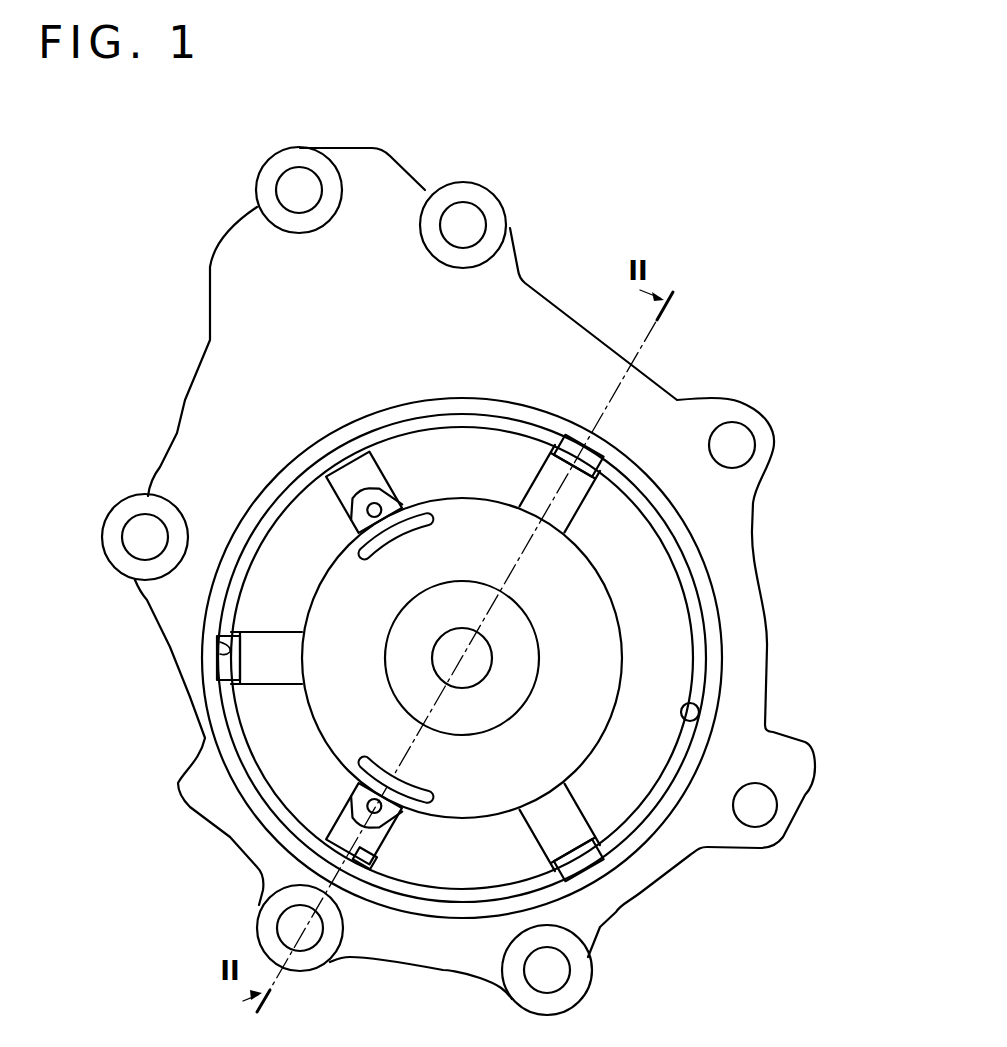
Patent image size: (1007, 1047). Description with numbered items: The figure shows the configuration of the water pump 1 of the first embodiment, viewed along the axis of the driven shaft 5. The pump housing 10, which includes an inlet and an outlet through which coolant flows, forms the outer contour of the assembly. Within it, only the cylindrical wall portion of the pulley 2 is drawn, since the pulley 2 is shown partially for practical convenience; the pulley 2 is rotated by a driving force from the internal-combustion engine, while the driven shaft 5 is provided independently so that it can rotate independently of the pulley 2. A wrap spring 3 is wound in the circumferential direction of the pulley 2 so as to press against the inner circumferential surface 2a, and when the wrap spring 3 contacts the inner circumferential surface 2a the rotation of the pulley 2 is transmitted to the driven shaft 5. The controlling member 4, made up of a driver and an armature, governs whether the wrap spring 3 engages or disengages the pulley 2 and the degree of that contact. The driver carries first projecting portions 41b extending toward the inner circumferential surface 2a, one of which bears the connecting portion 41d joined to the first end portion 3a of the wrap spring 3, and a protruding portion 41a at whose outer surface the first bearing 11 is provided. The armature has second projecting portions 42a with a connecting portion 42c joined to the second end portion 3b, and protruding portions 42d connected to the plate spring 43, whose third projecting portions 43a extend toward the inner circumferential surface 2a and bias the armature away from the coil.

The water pump 1 is at (543, 178).
The pulley 2 is at (676, 518).
The inner circumferential surface 2a is at (697, 725).
The wrap spring 3 is at (662, 790).
The first end portion 3a is at (220, 647).
The second end portion 3b is at (358, 827).
The controlling member 4 is at (609, 783).
The driven shaft 5 is at (472, 658).
The pump housing 10 is at (662, 426).
The first bearing 11 is at (438, 755).
The protruding portion 41a is at (488, 708).
The first projecting portions 41b is at (267, 643).
The connecting portion 41d is at (220, 655).
The second projecting portions 42a is at (353, 492).
The connecting portion 42c is at (365, 856).
The protruding portions 42d is at (365, 803).
The plate spring 43 is at (545, 775).
The third projecting portions 43a is at (362, 800).